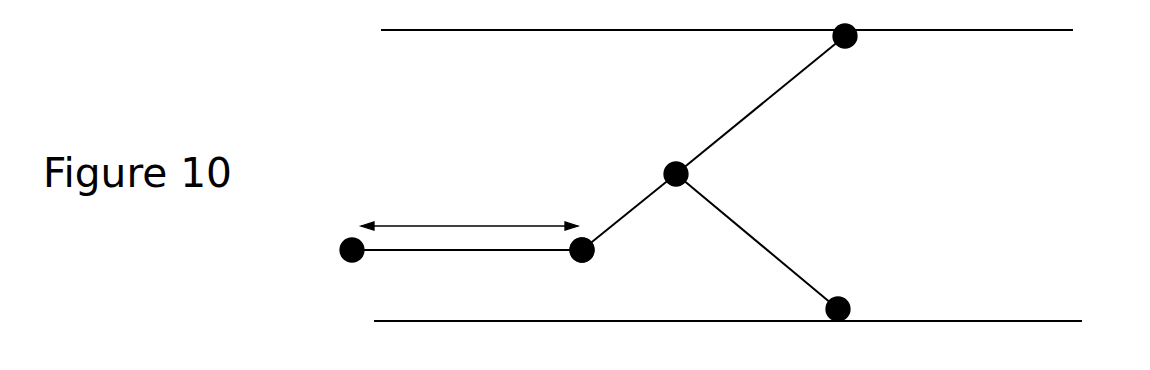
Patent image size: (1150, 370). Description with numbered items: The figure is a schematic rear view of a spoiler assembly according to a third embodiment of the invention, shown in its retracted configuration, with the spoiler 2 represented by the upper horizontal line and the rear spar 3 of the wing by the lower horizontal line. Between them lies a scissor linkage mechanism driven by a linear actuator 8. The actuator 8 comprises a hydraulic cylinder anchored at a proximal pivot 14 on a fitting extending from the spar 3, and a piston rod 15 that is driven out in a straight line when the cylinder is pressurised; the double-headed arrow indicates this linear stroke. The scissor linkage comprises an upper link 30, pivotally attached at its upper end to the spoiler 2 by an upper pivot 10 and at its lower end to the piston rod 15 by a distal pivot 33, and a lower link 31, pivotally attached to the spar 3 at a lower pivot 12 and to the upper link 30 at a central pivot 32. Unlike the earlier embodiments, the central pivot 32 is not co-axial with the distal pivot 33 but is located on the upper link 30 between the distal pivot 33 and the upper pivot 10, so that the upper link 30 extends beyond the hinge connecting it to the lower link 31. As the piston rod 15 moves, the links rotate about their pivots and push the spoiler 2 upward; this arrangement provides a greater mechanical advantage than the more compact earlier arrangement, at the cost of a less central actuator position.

The spoiler 2 is at (540, 30).
The rear spar 3 is at (1000, 163).
The linear actuator 8 is at (419, 267).
The upper pivot 10 is at (852, 45).
The lower pivot 12 is at (850, 305).
The proximal pivot 14 is at (341, 258).
The piston rod 15 is at (538, 252).
The upper link 30 is at (737, 127).
The lower link 31 is at (758, 242).
The central pivot 32 is at (665, 164).
The distal pivot 33 is at (591, 259).